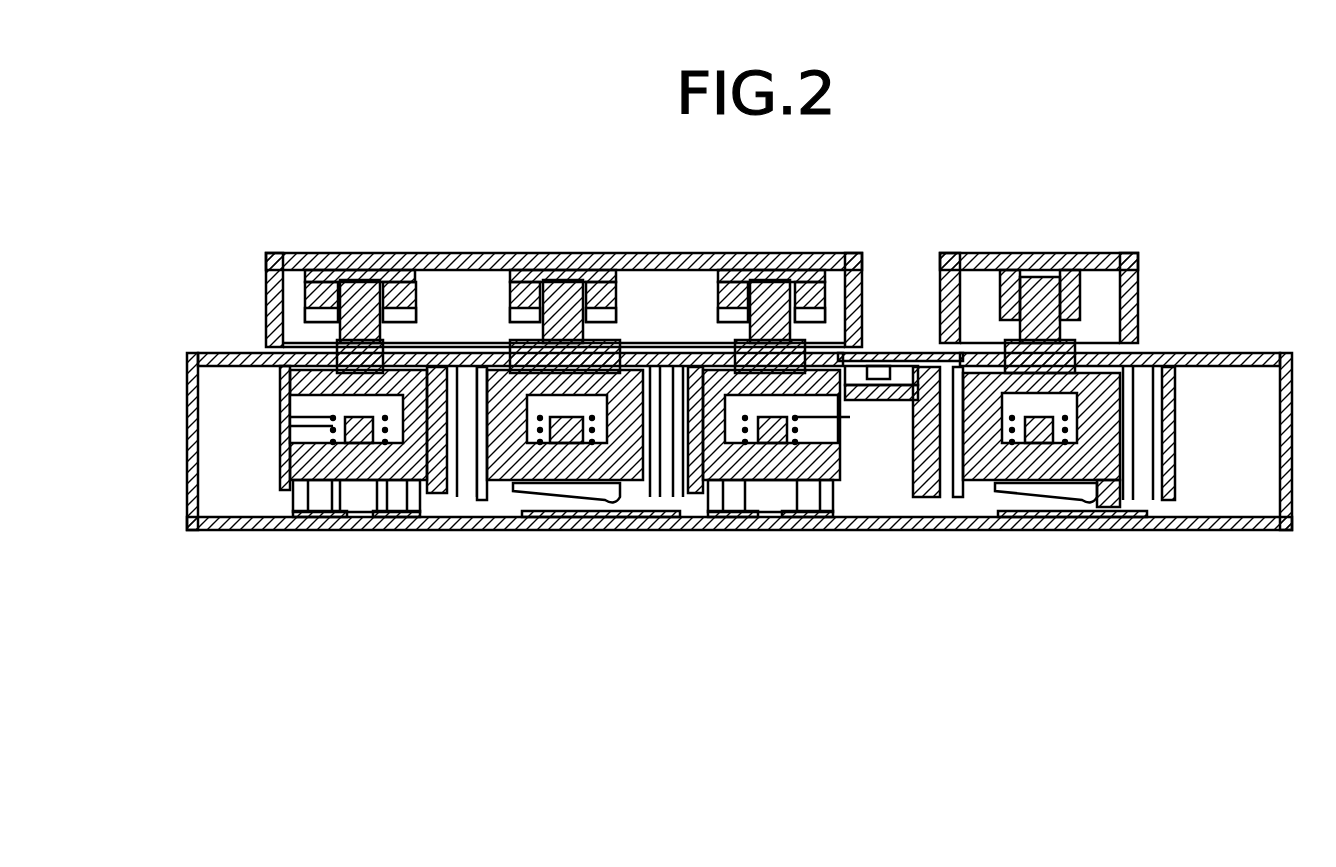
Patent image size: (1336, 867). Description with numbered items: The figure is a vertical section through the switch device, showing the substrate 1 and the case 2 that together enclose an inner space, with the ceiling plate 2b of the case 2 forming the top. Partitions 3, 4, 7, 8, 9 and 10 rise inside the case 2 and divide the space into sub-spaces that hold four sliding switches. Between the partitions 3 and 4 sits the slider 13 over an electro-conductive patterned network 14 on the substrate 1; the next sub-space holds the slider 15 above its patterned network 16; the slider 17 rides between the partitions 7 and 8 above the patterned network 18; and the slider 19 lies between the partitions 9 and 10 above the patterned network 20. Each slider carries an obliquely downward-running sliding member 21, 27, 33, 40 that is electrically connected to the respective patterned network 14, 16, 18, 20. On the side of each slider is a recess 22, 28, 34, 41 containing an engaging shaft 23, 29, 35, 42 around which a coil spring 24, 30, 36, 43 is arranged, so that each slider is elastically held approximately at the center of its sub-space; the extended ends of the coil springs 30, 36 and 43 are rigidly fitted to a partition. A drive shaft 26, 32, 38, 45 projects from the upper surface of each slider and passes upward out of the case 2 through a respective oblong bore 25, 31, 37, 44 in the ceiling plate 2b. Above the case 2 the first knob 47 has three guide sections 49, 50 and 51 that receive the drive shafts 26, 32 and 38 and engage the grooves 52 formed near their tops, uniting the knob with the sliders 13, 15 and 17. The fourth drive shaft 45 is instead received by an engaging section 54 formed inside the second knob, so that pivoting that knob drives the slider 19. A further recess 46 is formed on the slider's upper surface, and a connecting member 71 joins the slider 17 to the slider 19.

The substrate 1 is at (223, 530).
The case 2 is at (192, 524).
The ceiling plate 2b is at (1253, 353).
The partition 3 is at (287, 387).
The partition 4 is at (440, 497).
The partition 7 is at (697, 497).
The partition 8 is at (838, 438).
The partition 9 is at (918, 487).
The partition 10 is at (1178, 478).
The slider 13 is at (362, 458).
The electro-conductive patterned network 14 is at (335, 512).
The slider 15 is at (490, 500).
The electro-conductive patterned network 16 is at (545, 518).
The slider 17 is at (777, 470).
The electro-conductive patterned network 18 is at (733, 500).
The slider 19 is at (982, 492).
The electro-conductive patterned network 20 is at (1065, 505).
The sliding member 21 is at (296, 505).
The recess 22 is at (310, 437).
The engaging shaft 23 is at (333, 405).
The coil spring 24 is at (330, 430).
The oblong bore 25 is at (330, 340).
The drive shaft 26 is at (342, 283).
The sliding member 27 is at (585, 497).
The recess 28 is at (638, 503).
The engaging shaft 29 is at (512, 335).
The coil spring 30 is at (483, 343).
The oblong bore 31 is at (612, 340).
The drive shaft 32 is at (573, 277).
The sliding member 33 is at (805, 512).
The recess 34 is at (890, 470).
The engaging shaft 35 is at (858, 343).
The coil spring 36 is at (745, 415).
The oblong bore 37 is at (773, 417).
The drive shaft 38 is at (790, 290).
The sliding member 40 is at (1082, 508).
The recess 41 is at (1067, 403).
The engaging shaft 42 is at (1037, 417).
The coil spring 43 is at (1010, 415).
The oblong bore 44 is at (1078, 340).
The drive shaft 45 is at (1045, 282).
The recess 46 is at (935, 362).
The first knob 47 is at (270, 255).
The guide section 49 is at (317, 312).
The guide section 50 is at (533, 315).
The guide section 51 is at (843, 300).
The groove 52 is at (377, 310).
The engaging section 54 is at (1088, 275).
The connecting member 71 is at (883, 356).